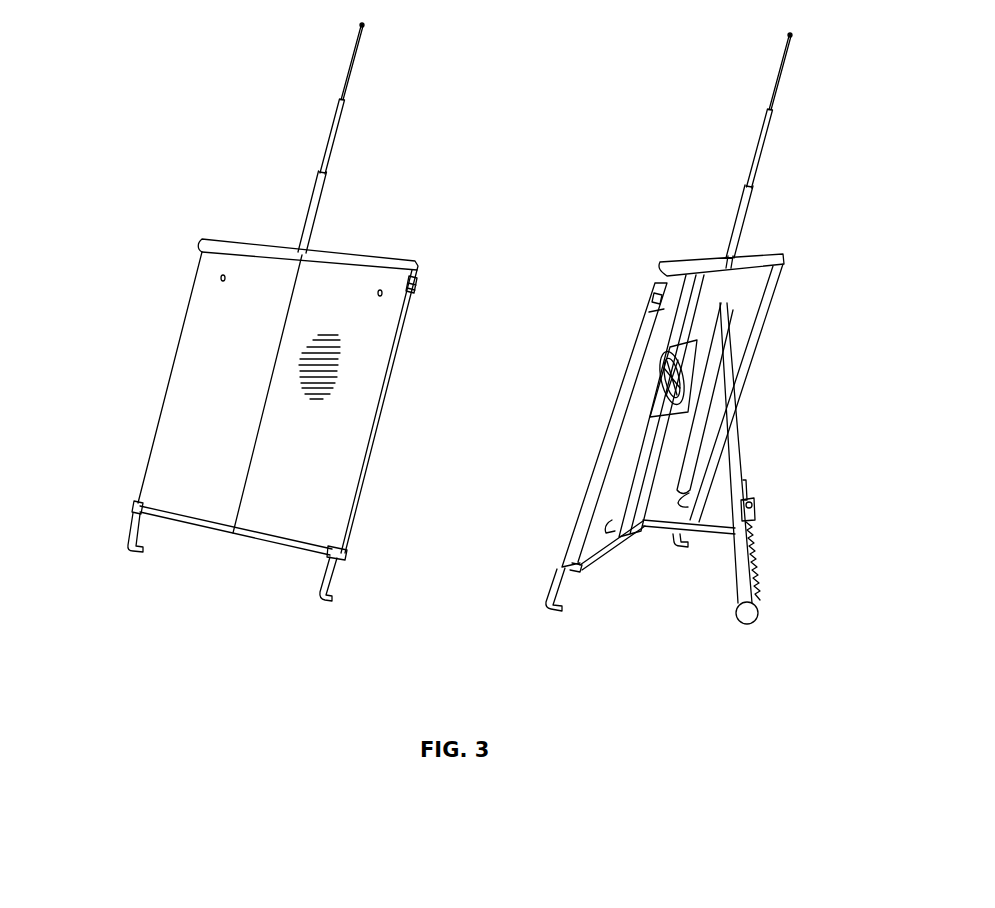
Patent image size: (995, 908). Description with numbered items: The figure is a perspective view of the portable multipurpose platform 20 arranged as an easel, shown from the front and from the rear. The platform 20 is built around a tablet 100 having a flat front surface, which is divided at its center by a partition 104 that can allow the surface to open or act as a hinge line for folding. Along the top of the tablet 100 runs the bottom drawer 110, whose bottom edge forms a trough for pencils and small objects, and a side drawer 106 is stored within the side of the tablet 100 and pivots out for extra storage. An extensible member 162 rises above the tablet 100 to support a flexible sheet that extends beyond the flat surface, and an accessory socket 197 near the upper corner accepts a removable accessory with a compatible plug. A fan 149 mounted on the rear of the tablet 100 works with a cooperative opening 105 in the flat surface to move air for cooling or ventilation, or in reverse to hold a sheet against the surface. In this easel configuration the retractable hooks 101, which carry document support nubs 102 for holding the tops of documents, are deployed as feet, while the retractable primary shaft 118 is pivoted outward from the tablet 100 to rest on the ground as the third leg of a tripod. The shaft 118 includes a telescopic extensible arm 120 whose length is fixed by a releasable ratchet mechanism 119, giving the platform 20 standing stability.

The multipurpose platform 20 is at (124, 190).
The tablet 100 is at (188, 289).
The retractable hooks 101 is at (137, 549).
The document support nubs 102 is at (137, 504).
The partition 104 is at (258, 427).
The cooperative opening 105 is at (325, 362).
The side drawers 106 is at (383, 411).
The bottom drawer 110 is at (380, 257).
The retractable primary shaft 118 is at (760, 432).
The releasable ratchet mechanism 119 is at (754, 503).
The telescopic extensible arm 120 is at (755, 577).
The fan 149 is at (675, 377).
The extensible member 162 is at (322, 213).
The accessory socket 197 is at (417, 287).